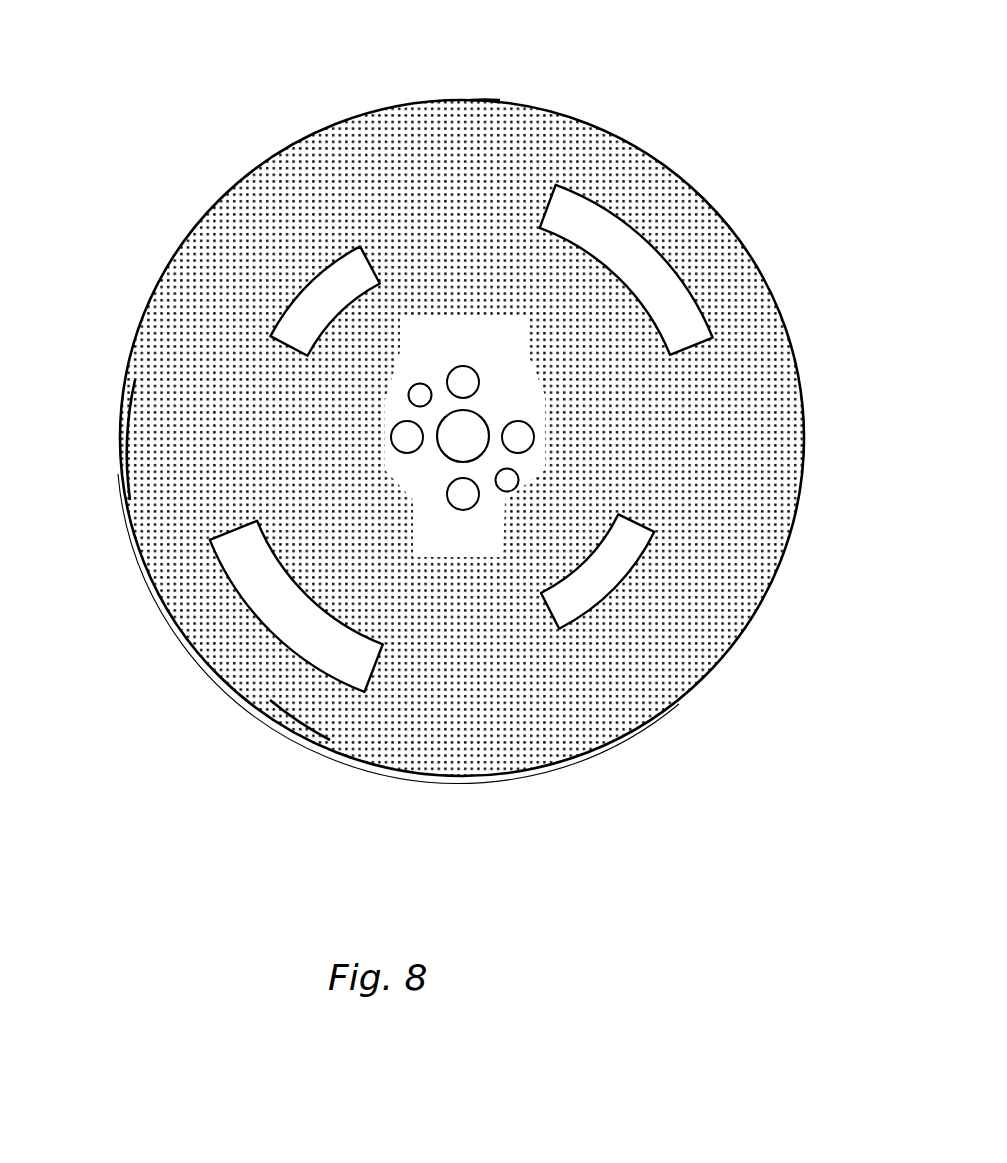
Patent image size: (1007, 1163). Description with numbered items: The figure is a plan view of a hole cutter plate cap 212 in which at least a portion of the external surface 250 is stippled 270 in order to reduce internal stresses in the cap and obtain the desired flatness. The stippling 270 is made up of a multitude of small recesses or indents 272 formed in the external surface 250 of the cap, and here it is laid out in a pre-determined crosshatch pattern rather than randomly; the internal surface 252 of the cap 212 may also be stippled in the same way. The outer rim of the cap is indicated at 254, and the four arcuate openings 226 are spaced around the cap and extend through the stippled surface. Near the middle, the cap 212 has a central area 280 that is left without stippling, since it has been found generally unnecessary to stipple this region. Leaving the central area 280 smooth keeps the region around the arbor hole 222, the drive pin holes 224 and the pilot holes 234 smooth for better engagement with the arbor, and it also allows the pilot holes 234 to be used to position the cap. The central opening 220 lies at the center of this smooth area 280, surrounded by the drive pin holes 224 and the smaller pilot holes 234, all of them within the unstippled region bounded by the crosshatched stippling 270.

The cap 212 is at (236, 158).
The external surface 250 is at (477, 100).
The outer perimeter 254 is at (558, 115).
The internal surface 252 is at (800, 512).
The stippling 270 is at (301, 718).
The recesses or indents 272 is at (150, 452).
The arcuate slots 226 is at (650, 263).
The central aperture 220 is at (477, 416).
The arbor hole 222 is at (477, 452).
The drive pin holes 224 is at (451, 508).
The pilot holes 234 is at (424, 383).
The central area 280 is at (452, 482).